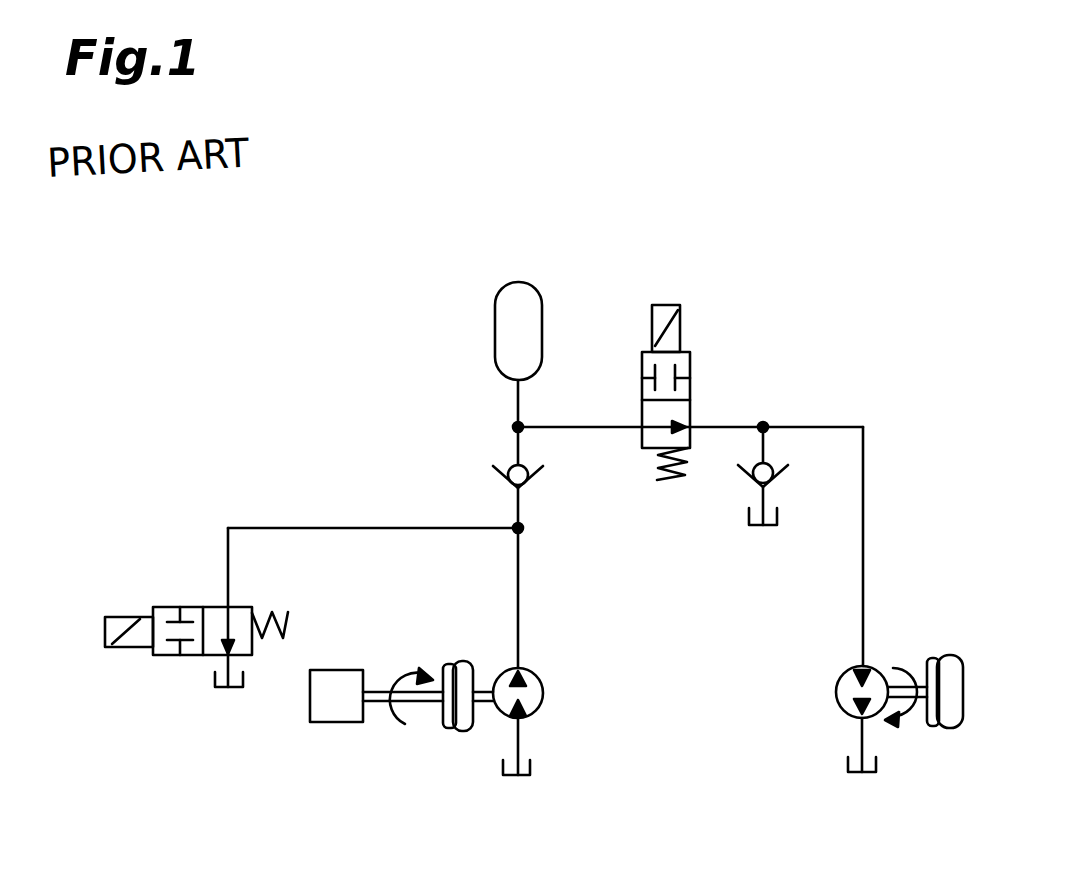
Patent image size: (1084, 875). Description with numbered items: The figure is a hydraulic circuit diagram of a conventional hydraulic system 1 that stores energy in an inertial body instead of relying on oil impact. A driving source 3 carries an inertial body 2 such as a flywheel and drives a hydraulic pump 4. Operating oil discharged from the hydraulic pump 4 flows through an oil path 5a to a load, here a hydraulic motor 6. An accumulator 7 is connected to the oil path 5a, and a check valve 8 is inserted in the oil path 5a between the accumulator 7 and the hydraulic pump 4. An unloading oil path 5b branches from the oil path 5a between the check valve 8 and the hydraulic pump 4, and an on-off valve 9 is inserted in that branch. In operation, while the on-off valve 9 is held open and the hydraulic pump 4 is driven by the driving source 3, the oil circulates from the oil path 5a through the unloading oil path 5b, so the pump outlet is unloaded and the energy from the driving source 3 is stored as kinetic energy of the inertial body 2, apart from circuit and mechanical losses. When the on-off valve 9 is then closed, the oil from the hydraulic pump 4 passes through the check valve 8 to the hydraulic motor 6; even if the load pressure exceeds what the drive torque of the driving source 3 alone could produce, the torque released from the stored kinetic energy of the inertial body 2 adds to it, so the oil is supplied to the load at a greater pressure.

The hydraulic system 1 is at (850, 248).
The inertial body 2 is at (455, 731).
The driving source 3 is at (337, 722).
The hydraulic pump 4 is at (543, 692).
The oil path 5a is at (518, 600).
The unloading oil path 5b is at (352, 528).
The hydraulic motor 6 is at (873, 666).
The accumulator 7 is at (542, 323).
The check valve 8 is at (527, 483).
The on-off valve 9 is at (203, 607).